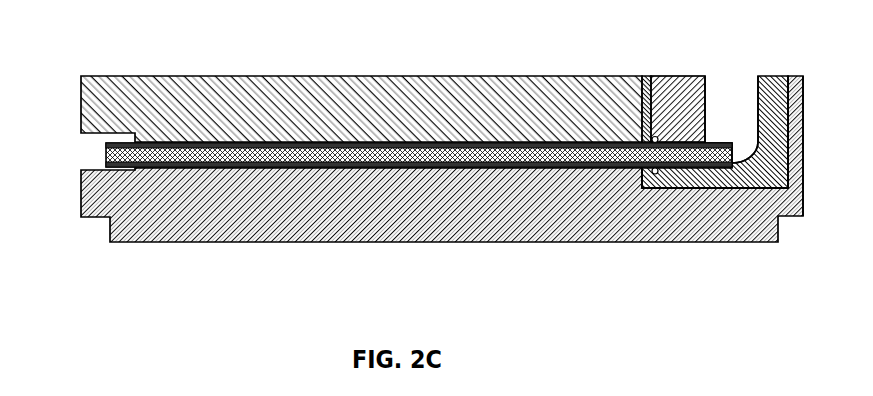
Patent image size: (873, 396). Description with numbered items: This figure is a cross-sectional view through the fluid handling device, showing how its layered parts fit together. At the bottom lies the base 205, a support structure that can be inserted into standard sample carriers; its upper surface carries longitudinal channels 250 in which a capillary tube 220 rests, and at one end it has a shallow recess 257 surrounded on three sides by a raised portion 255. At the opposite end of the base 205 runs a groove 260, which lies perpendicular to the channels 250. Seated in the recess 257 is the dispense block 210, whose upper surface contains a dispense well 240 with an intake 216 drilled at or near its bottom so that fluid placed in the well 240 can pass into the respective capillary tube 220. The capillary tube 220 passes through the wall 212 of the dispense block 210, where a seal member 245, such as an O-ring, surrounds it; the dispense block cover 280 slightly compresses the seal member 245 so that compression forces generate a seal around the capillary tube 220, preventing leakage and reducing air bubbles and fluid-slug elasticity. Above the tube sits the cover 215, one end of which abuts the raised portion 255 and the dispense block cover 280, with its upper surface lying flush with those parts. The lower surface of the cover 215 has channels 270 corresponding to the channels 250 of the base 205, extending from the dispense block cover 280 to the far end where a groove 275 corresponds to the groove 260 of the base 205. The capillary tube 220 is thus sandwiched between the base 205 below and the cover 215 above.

The base 205 is at (180, 233).
The dispense block 210 is at (773, 88).
The wall 212 is at (658, 93).
The cover 215 is at (137, 90).
The intake 216 is at (698, 172).
The capillary tube 220 is at (332, 152).
The dispense well 240 is at (747, 91).
The seal member 245 is at (655, 178).
The channel 250 is at (418, 171).
The raised portion 255 is at (797, 180).
The recess 257 is at (668, 190).
The groove 260 is at (81, 167).
The channel 270 is at (417, 141).
The groove 275 is at (81, 139).
The dispense block cover 280 is at (647, 76).